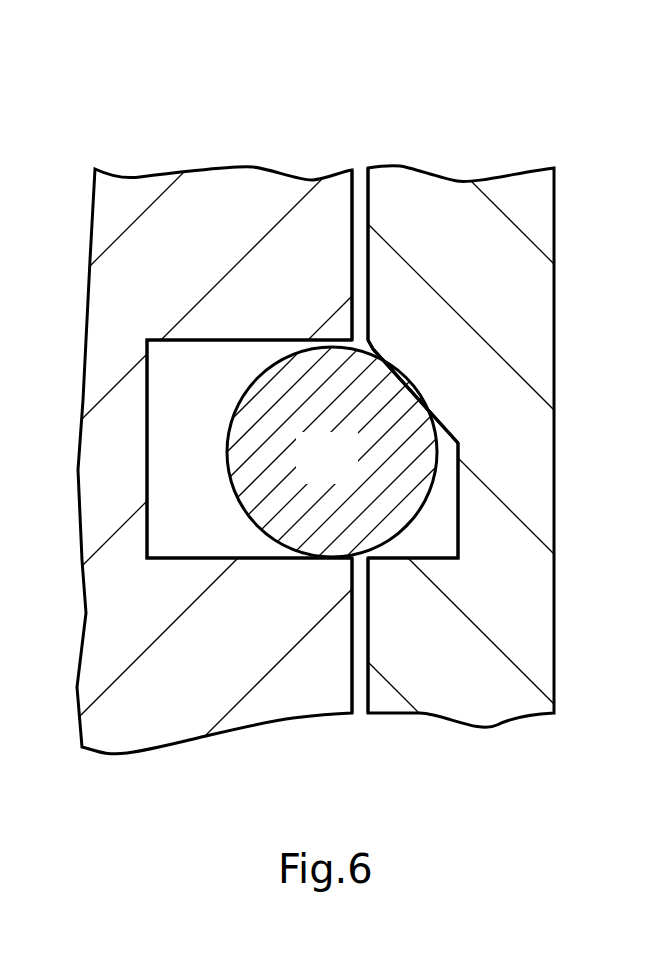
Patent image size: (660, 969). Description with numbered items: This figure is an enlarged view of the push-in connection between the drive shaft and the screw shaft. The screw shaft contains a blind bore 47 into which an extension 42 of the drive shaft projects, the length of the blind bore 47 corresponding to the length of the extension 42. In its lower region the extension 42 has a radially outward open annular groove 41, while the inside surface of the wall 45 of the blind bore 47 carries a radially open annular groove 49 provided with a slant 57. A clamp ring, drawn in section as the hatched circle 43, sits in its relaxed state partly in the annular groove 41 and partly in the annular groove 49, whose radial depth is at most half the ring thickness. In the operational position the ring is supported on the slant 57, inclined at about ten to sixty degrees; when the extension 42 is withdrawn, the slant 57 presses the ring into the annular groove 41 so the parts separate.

The annular groove 41 is at (171, 478).
The extension 42 is at (153, 230).
The ball 43 is at (300, 478).
The wall 45 is at (452, 225).
The blind bore 47 is at (445, 770).
The annular groove 49 is at (462, 560).
The slant 57 is at (418, 377).